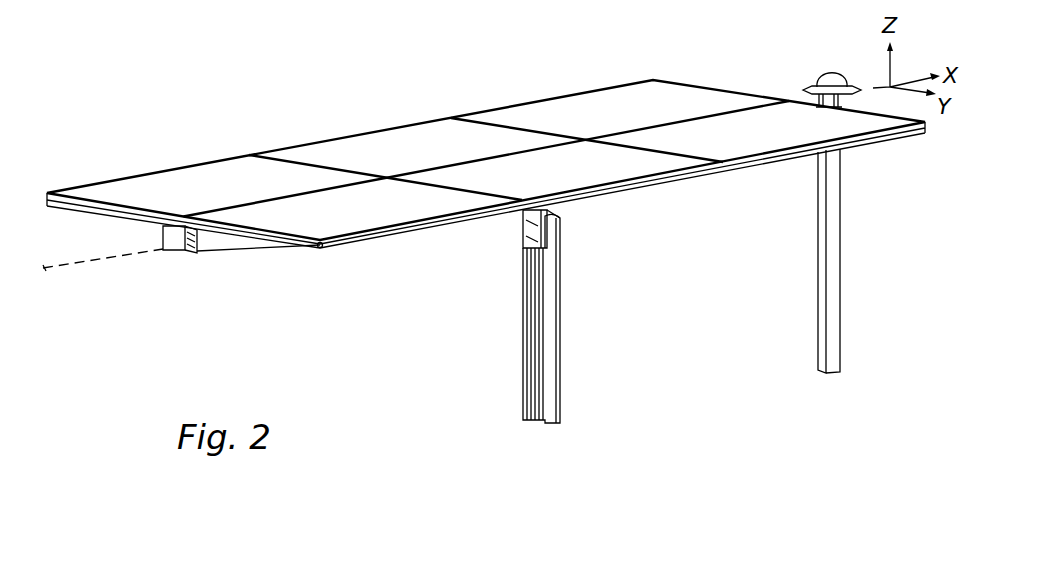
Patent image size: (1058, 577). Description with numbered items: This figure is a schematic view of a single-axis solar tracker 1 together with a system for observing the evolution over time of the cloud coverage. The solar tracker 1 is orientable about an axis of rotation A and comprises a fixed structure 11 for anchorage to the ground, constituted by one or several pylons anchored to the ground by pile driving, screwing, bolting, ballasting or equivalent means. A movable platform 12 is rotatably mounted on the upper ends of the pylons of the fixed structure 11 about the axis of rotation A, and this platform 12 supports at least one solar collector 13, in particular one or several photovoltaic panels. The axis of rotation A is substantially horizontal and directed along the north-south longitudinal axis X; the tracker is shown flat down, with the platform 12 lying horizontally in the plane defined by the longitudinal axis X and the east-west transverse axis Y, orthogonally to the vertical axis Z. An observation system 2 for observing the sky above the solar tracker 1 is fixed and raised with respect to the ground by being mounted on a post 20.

The single-axis solar tracker 1 is at (484, 224).
The observation system 2 is at (826, 70).
The fixed structure 11 is at (550, 315).
The movable platform 12 is at (340, 236).
The solar collector 13 is at (182, 184).
The post 20 is at (833, 280).
The axis of rotation A is at (50, 268).